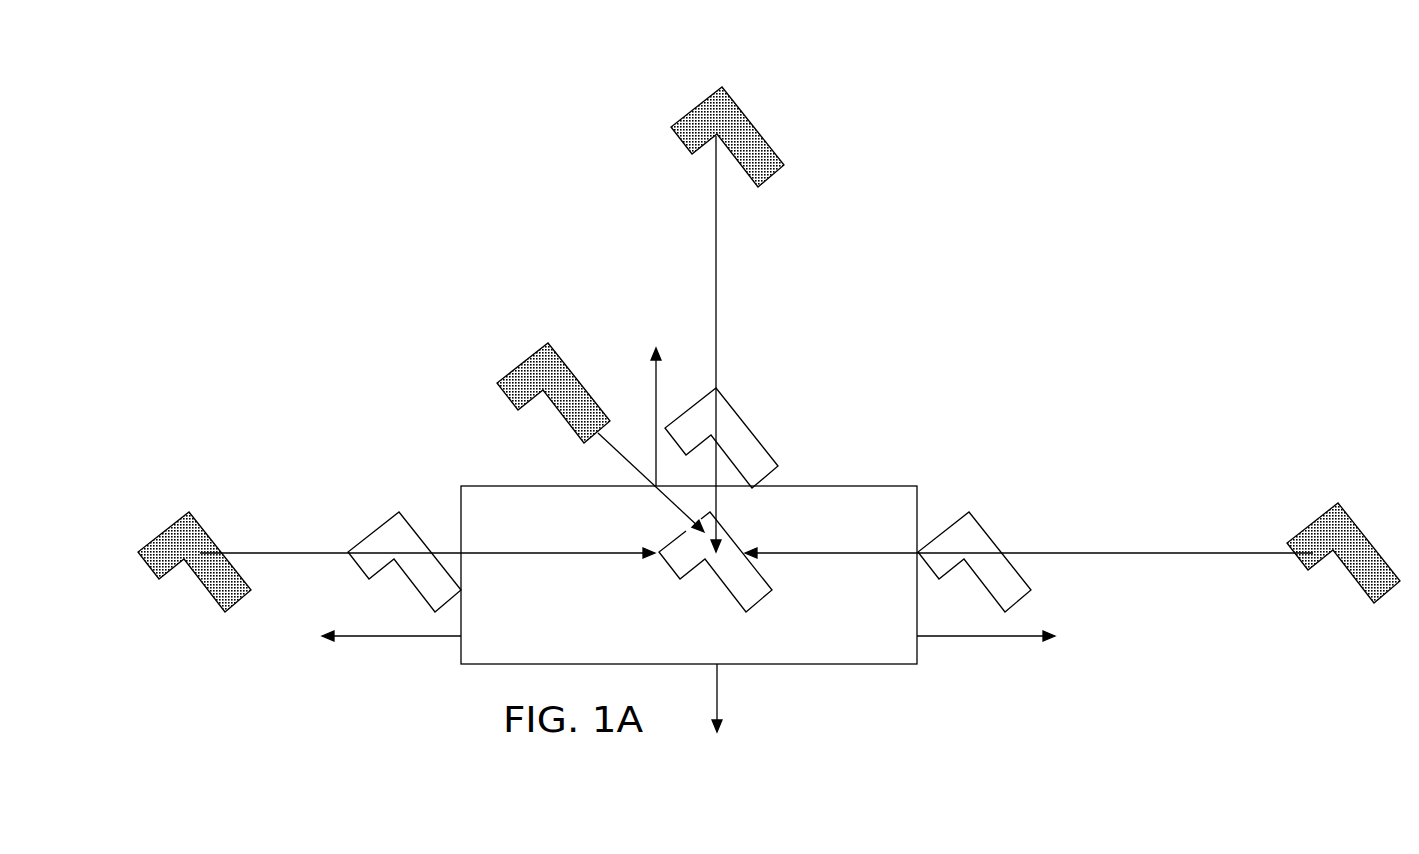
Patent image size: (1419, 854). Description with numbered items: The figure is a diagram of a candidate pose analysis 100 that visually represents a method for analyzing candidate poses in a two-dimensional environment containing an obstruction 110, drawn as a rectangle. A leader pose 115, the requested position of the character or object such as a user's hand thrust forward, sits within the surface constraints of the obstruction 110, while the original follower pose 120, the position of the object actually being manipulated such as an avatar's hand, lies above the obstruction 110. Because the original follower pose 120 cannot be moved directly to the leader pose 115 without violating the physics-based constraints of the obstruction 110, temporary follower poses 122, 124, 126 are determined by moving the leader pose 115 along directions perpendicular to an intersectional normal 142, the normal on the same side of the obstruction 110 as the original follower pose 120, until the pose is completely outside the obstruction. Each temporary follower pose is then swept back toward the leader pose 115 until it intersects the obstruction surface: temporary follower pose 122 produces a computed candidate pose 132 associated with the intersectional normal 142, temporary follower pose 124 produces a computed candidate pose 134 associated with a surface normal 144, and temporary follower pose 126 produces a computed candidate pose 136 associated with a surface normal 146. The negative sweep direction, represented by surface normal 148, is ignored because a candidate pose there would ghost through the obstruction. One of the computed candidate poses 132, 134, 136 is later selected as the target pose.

The candidate pose analysis 100 is at (376, 131).
The obstruction 110 is at (851, 475).
The leader pose 115 is at (668, 568).
The original follower pose 120 is at (523, 360).
The temporary follower pose 122 is at (695, 103).
The temporary follower pose 124 is at (1370, 542).
The temporary follower pose 126 is at (163, 530).
The computed candidate pose 132 is at (783, 423).
The computed candidate pose 134 is at (1013, 523).
The computed candidate pose 136 is at (382, 525).
The intersectional normal 142 is at (653, 374).
The surface normal 144 is at (978, 638).
The surface normal 146 is at (395, 638).
The surface normal 148 is at (720, 697).